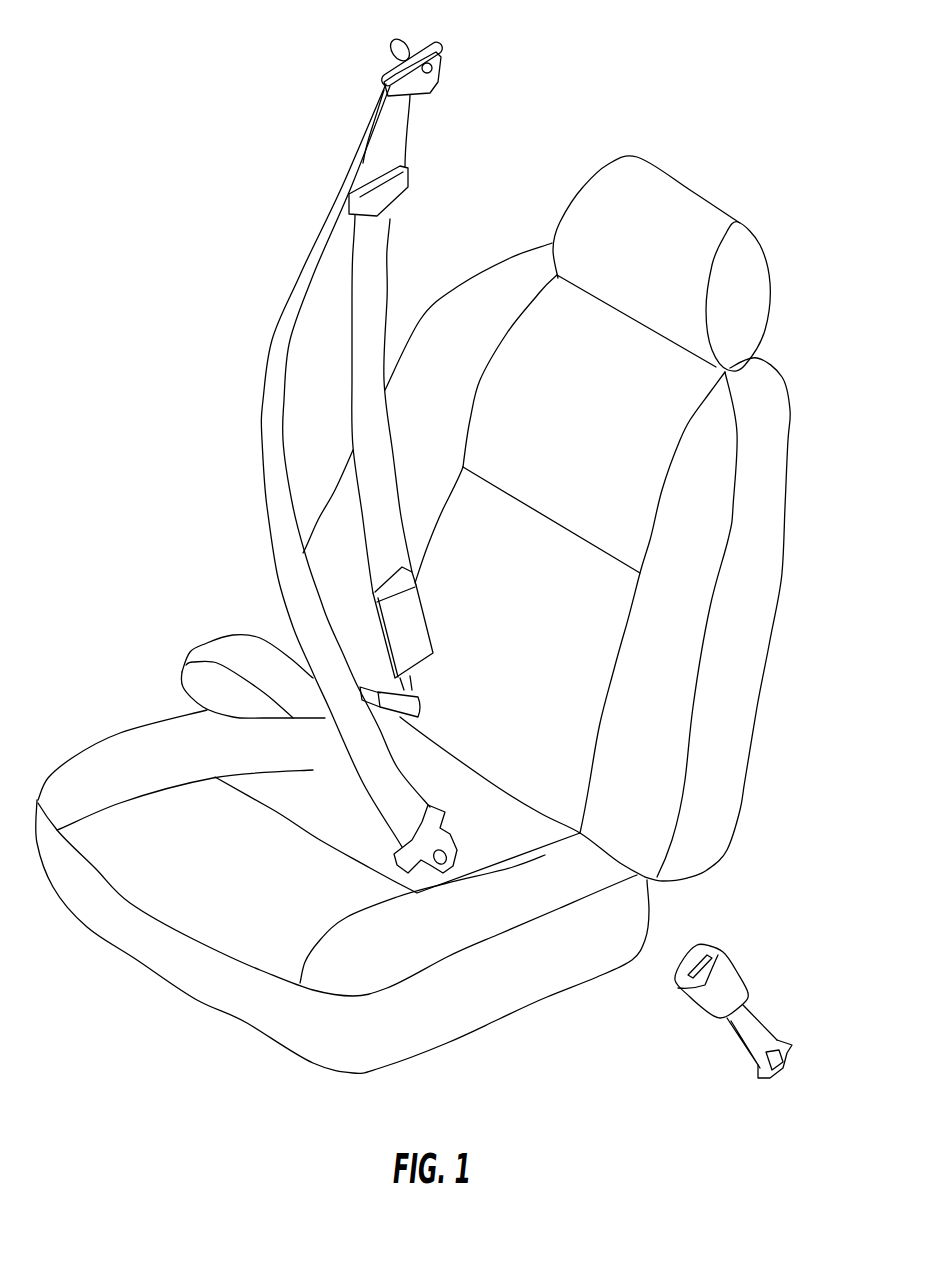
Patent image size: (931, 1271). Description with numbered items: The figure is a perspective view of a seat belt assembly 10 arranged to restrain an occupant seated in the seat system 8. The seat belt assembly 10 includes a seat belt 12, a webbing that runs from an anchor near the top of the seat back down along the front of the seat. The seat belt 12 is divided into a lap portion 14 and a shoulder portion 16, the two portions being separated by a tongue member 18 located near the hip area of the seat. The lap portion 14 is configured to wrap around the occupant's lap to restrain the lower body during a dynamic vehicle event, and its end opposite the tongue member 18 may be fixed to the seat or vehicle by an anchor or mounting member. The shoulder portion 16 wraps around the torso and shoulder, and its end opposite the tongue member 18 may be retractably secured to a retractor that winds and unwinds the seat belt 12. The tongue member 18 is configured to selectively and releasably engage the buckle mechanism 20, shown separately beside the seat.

The seat system 8 is at (752, 408).
The seat belt assembly 10 is at (319, 454).
The seat belt 12 is at (210, 432).
The lap portion 14 is at (203, 652).
The shoulder portion 16 is at (270, 337).
The tongue member 18 is at (456, 848).
The buckle mechanism 20 is at (730, 975).